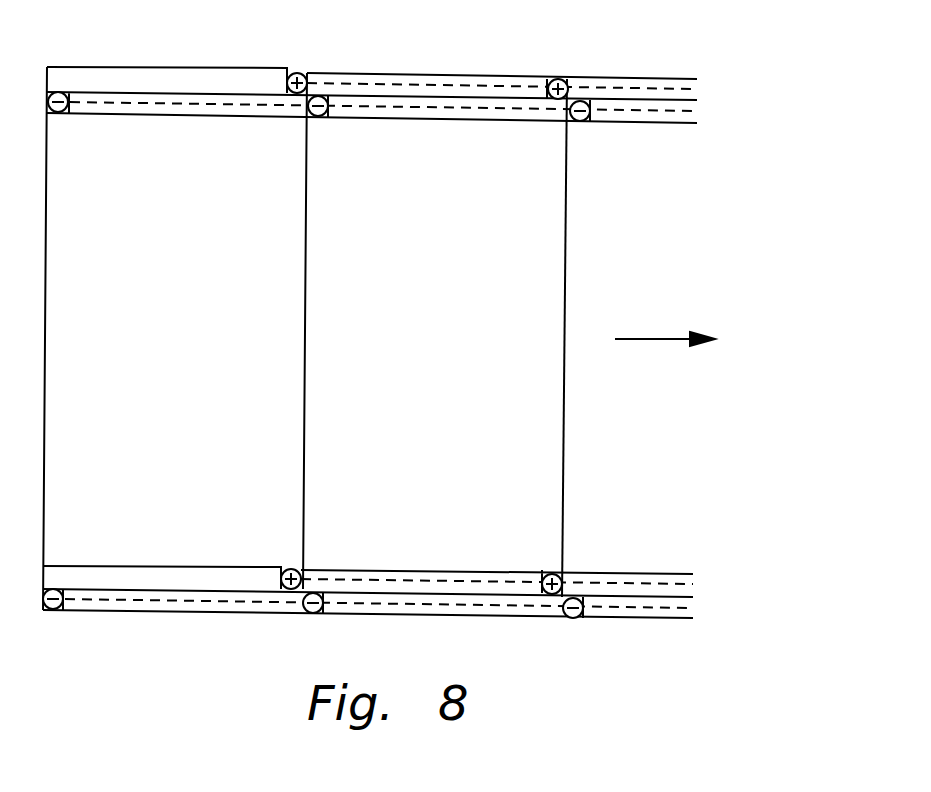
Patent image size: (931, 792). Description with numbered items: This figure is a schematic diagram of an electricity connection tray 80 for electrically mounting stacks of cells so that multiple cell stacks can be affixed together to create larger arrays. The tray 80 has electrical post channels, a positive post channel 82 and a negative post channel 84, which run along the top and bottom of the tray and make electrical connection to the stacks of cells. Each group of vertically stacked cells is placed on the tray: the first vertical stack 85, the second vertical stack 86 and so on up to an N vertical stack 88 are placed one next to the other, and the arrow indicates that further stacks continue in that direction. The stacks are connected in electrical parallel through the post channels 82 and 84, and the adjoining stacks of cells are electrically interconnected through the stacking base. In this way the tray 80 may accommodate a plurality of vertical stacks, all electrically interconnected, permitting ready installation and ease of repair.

The electricity connection tray 80 is at (190, 53).
The positive electrical post channel 82 is at (700, 87).
The negative electrical post channel 84 is at (700, 111).
The first vertical stack 85 is at (185, 392).
The second vertical stack 86 is at (452, 380).
The N vertical stack 88 is at (652, 408).